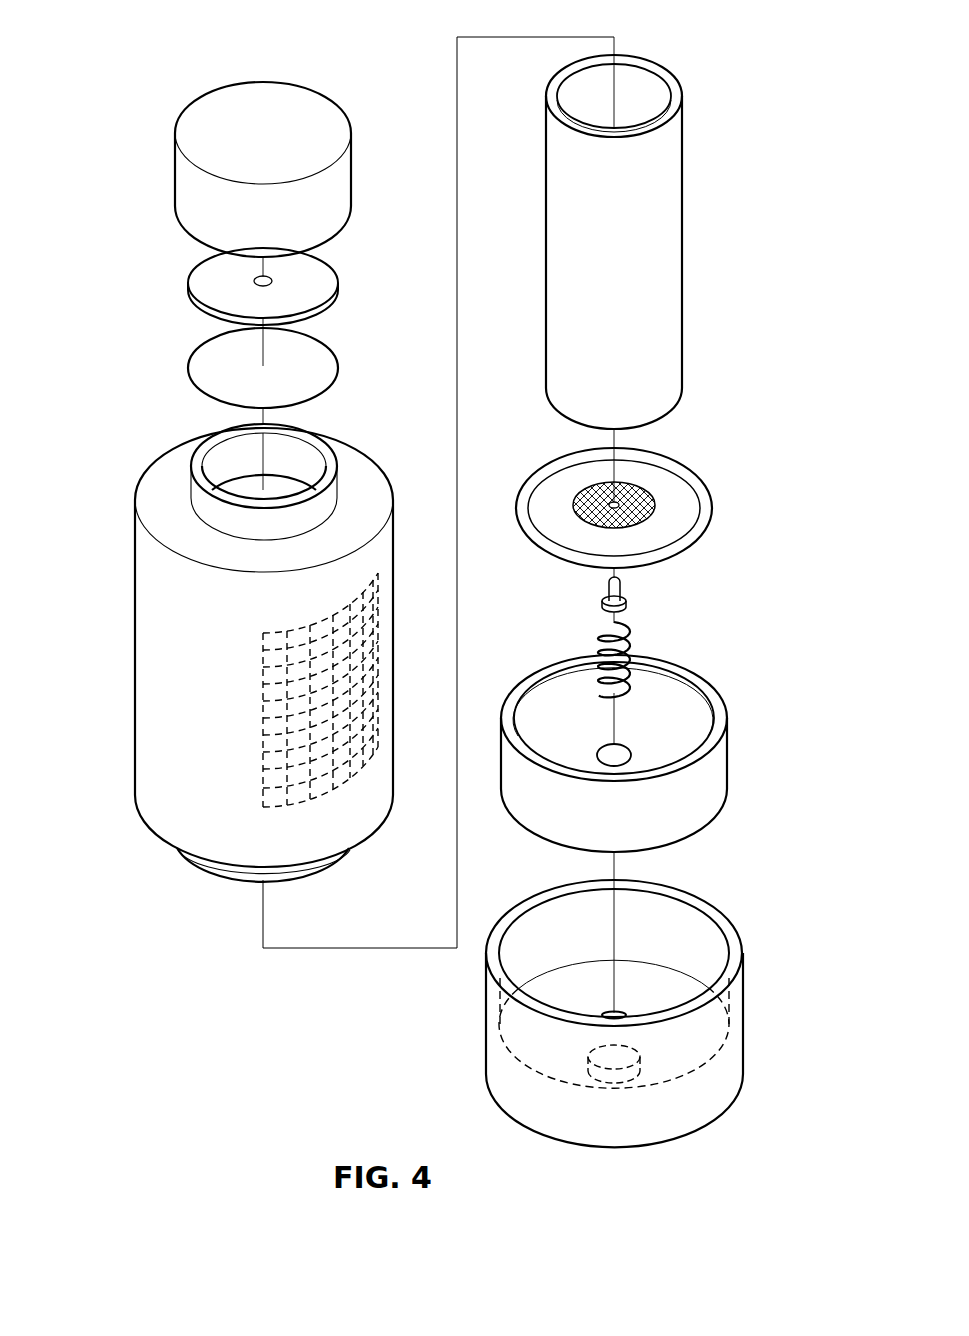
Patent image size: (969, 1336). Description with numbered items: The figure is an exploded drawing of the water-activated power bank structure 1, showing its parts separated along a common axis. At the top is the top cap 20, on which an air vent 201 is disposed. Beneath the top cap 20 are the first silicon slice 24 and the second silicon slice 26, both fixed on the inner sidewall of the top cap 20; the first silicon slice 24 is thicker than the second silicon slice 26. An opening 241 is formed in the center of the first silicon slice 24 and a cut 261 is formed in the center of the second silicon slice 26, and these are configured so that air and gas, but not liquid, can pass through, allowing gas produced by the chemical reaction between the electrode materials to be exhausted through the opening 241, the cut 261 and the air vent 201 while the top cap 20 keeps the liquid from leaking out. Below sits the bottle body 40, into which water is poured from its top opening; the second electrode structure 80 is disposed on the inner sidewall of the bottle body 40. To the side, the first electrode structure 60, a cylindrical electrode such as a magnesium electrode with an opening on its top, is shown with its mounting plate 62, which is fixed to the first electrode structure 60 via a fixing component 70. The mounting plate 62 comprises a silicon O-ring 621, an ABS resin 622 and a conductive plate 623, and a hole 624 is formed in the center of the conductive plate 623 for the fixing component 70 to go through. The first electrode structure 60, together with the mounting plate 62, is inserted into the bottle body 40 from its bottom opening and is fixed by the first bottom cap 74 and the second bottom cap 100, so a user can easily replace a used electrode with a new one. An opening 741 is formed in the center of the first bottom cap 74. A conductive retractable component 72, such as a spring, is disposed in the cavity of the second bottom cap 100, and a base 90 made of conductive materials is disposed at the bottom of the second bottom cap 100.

The water-activated power bank structure 1 is at (113, 133).
The top cap 20 is at (338, 172).
The air vent 201 is at (313, 133).
The first silicon slice 24 is at (195, 296).
The opening 241 is at (255, 280).
The second silicon slice 26 is at (205, 372).
The cut 261 is at (258, 363).
The bottle body 40 is at (145, 656).
The second electrode structure 80 is at (382, 690).
The first electrode structure 60 is at (673, 312).
The mounting plate 62 is at (809, 375).
The silicon O-ring 621 is at (708, 503).
The ABS resin 622 is at (678, 493).
The conductive plate 623 is at (645, 488).
The hole 624 is at (618, 503).
The fixing component 70 is at (623, 588).
The retractable component 72 is at (632, 635).
The first bottom cap 74 is at (720, 768).
The opening 741 is at (618, 756).
The second bottom cap 100 is at (745, 1013).
The base 90 is at (620, 1062).